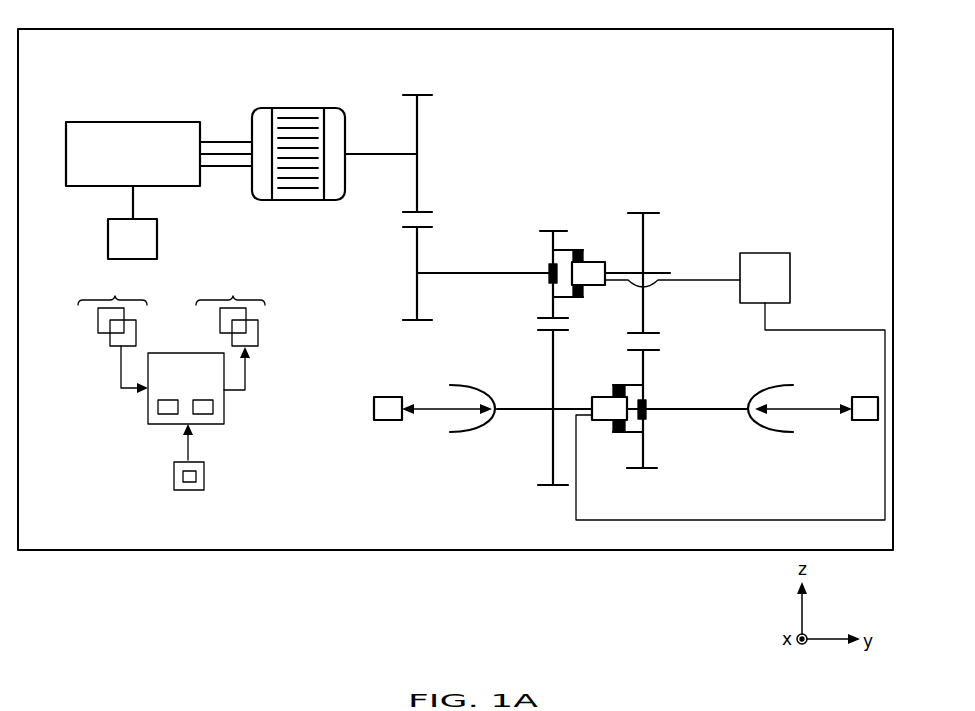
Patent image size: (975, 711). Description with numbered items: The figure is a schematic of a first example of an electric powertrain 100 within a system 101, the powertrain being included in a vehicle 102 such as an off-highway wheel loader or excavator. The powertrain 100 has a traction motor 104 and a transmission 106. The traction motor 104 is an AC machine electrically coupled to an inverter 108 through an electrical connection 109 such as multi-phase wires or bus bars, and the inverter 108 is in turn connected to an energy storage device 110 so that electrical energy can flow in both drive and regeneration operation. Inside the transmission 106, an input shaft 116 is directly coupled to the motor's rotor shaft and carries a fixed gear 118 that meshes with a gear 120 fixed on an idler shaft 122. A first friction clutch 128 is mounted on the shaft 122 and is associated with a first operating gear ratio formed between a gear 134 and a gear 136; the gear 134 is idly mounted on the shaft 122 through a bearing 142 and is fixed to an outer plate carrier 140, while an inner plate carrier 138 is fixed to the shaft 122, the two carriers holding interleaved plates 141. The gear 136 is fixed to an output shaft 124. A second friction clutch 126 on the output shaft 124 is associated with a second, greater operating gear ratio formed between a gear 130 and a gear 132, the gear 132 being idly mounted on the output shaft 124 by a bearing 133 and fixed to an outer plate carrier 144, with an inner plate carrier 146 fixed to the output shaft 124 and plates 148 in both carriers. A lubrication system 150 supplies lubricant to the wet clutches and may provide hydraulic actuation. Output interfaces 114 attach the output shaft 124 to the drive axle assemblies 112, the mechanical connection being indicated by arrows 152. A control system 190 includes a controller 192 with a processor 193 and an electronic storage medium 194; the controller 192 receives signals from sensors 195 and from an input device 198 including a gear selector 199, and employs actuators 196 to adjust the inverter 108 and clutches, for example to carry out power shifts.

The electric powertrain 100 is at (97, 91).
The system 101 is at (54, 68).
The vehicle 102 is at (133, 29).
The traction motor 104 is at (293, 108).
The transmission 106 is at (748, 136).
The inverter 108 is at (138, 122).
The electrical connection 109 is at (226, 142).
The energy storage device 110 is at (157, 240).
The drive axle assemblies 112 is at (386, 422).
The output interfaces 114 is at (448, 380).
The input shaft 116 is at (383, 154).
The gear 118 is at (417, 95).
The gear 120 is at (408, 321).
The shaft 122 is at (476, 273).
The output shaft 124 is at (517, 409).
The second friction clutch 126 is at (620, 416).
The first friction clutch 128 is at (581, 251).
The gear 130 is at (643, 213).
The gear 132 is at (648, 468).
The bearing 133 is at (647, 413).
The gear 134 is at (548, 231).
The gear 136 is at (553, 482).
The inner plate carrier 138 is at (597, 297).
The outer plate carrier 140 is at (568, 246).
The plates 141 is at (586, 252).
The bearing 142 is at (549, 277).
The outer plate carrier 144 is at (628, 436).
The inner plate carrier 146 is at (599, 432).
The plates 148 is at (613, 391).
The lubrication system 150 is at (765, 253).
The arrows 152 is at (437, 412).
The control system 190 is at (304, 272).
The controller 192 is at (200, 385).
The processor 193 is at (158, 407).
The electronic storage medium 194 is at (213, 407).
The sensors 195 is at (112, 310).
The actuators 196 is at (230, 310).
The input device 198 is at (204, 483).
The gear selector 199 is at (183, 476).